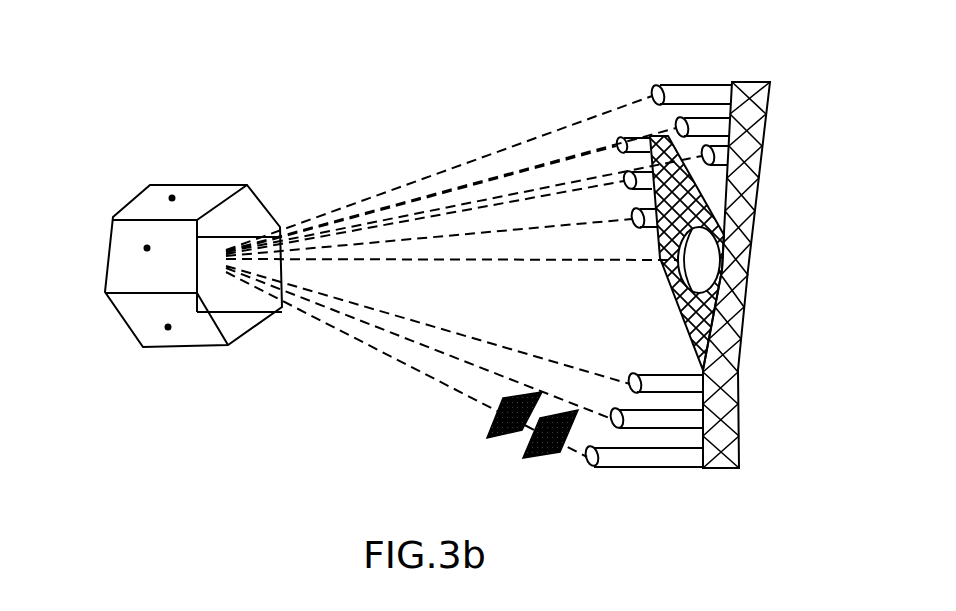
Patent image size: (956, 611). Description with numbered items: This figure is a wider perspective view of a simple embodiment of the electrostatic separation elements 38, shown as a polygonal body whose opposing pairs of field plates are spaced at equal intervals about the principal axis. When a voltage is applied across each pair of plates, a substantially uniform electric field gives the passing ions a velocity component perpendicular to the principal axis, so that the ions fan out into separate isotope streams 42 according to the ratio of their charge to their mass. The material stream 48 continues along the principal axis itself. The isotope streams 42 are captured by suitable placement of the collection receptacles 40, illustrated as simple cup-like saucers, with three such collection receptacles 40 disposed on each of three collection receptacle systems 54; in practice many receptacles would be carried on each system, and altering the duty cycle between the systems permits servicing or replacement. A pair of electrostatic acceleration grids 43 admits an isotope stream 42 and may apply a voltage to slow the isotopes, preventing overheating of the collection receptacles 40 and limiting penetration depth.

The electrostatic separation elements 38 is at (232, 360).
The collection receptacles 40 is at (718, 148).
The isotope streams 42 is at (377, 240).
The electrostatic acceleration grids 43 is at (541, 444).
The material stream 48 is at (492, 262).
The collection receptacle systems 54 is at (743, 83).